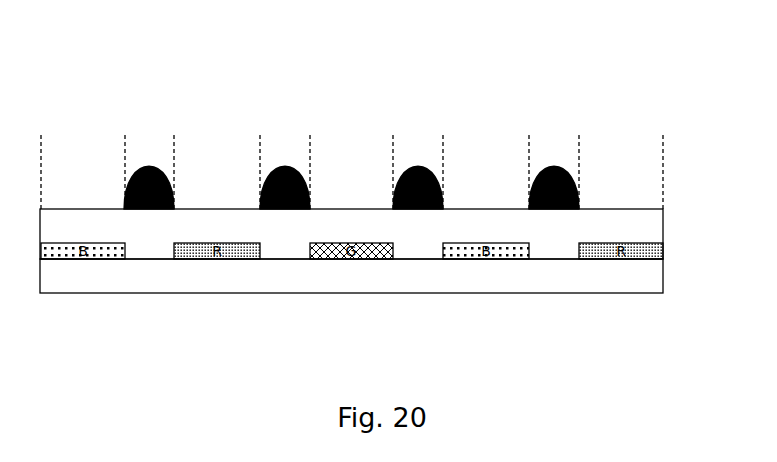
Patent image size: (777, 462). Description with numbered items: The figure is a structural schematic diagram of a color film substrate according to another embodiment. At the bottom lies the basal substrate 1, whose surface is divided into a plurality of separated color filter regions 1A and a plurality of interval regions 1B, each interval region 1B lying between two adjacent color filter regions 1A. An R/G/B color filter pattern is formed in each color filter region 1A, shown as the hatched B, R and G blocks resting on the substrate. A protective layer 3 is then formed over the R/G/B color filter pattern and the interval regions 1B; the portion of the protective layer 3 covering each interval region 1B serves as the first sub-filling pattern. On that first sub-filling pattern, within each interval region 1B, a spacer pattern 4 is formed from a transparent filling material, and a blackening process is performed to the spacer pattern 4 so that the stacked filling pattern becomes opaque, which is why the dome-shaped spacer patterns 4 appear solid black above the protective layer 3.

The basal substrate 1 is at (629, 276).
The protective layer 3 is at (629, 224).
The spacer pattern 4 is at (152, 166).
The color filter region 1A is at (41, 171).
The interval region 1B is at (125, 151).